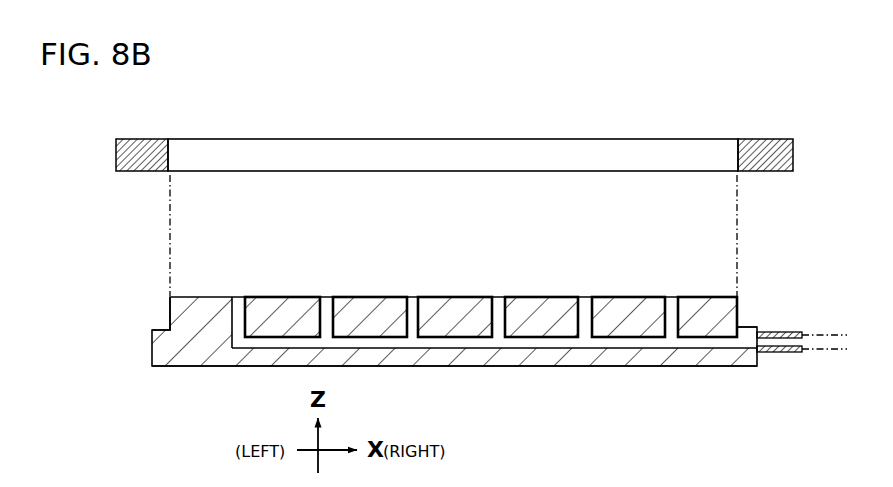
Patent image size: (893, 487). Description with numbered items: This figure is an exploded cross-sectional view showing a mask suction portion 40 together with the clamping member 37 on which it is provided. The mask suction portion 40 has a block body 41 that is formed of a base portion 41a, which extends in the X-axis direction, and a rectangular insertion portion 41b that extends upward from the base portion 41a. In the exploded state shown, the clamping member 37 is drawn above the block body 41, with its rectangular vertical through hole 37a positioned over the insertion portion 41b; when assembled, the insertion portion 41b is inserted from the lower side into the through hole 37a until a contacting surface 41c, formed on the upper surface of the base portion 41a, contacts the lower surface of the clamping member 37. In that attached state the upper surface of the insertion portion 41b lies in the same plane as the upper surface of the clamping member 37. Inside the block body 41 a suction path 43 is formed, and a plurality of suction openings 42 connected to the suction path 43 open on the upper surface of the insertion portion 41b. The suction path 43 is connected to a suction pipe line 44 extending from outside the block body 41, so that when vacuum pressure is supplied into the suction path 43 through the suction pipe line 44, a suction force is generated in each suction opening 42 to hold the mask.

The clamping member 37 is at (454, 114).
The vertical through hole 37a is at (431, 138).
The mask suction portion 40 is at (466, 326).
The block body 41 is at (447, 335).
The base portion 41a is at (505, 357).
The insertion portion 41b is at (697, 302).
The contacting surface 41c is at (158, 327).
The suction openings 42 is at (322, 296).
The suction path 43 is at (620, 343).
The suction pipe line 44 is at (782, 354).